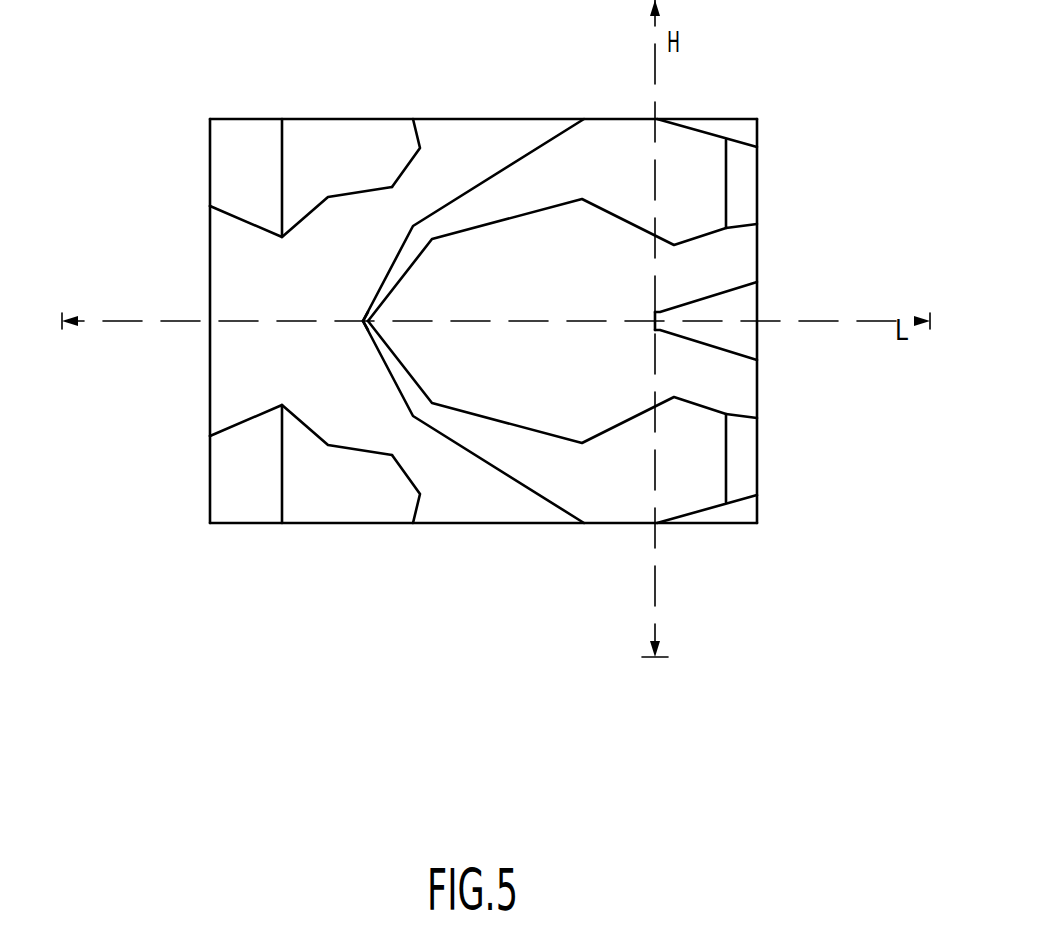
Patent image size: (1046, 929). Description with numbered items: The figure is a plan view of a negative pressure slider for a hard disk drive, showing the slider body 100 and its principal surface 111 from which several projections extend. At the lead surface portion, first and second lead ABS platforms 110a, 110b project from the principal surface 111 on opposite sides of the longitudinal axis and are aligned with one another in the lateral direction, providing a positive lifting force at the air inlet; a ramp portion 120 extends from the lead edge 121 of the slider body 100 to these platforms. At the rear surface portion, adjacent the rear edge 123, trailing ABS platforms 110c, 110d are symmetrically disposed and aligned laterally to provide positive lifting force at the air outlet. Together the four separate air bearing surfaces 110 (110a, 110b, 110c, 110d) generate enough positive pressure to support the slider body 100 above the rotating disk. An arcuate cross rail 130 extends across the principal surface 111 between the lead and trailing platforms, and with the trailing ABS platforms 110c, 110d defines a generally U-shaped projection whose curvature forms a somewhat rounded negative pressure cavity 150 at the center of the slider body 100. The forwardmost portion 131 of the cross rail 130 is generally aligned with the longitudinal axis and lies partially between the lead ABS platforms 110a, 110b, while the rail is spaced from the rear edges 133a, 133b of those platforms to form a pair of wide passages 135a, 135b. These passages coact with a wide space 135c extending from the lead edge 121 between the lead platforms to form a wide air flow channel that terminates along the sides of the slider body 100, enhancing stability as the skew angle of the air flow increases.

The slider body 100 is at (762, 350).
The ABS platforms 110 is at (562, 338).
The first lead ABS platform 110a is at (338, 142).
The second lead ABS platform 110b is at (368, 498).
The trailing ABS platform 110c is at (642, 183).
The trailing ABS platform 110d is at (685, 442).
The principal surface 111 is at (237, 367).
The ramp portion 120 is at (232, 183).
The lead edge 121 is at (218, 502).
The rear edge 123 is at (762, 492).
The arcuate cross rail 130 is at (422, 321).
The forwardmost portion 131 is at (363, 324).
The rear edge of lead ABS platform 133a is at (415, 160).
The rear edge of lead ABS platform 133b is at (420, 497).
The wide passage 135a is at (450, 168).
The wide passage 135b is at (445, 465).
The wide space 135c is at (234, 250).
The negative pressure cavity 150 is at (400, 334).